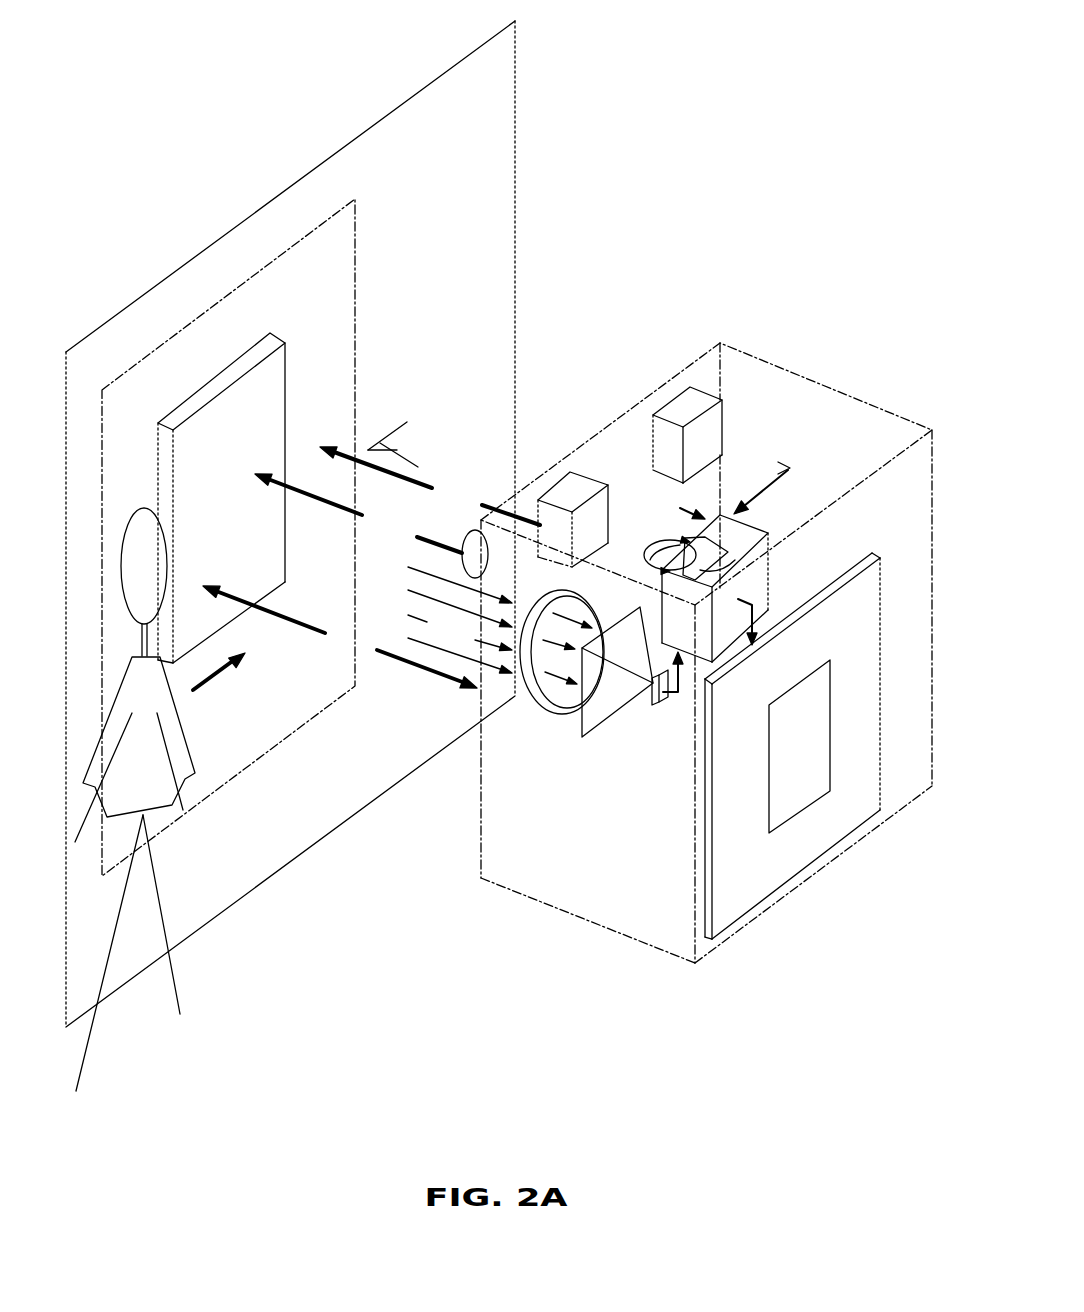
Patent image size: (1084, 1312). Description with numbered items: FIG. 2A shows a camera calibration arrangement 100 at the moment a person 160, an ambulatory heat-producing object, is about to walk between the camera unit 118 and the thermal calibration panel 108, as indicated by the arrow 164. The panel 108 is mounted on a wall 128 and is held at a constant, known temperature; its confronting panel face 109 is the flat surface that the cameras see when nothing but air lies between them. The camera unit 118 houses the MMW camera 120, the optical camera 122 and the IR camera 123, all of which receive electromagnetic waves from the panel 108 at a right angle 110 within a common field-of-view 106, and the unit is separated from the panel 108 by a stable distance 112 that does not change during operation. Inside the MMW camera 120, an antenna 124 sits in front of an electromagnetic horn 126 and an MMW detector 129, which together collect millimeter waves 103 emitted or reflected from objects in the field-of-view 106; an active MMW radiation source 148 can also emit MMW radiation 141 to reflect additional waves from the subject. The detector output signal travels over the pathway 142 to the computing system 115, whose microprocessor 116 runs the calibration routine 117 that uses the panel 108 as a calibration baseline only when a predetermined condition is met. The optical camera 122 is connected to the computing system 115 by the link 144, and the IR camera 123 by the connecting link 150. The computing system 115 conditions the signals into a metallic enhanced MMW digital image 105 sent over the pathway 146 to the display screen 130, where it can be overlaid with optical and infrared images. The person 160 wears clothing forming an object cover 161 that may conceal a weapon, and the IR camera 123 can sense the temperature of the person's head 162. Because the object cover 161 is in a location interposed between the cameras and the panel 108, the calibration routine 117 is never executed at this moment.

The camera calibration arrangement 100 is at (702, 40).
The wall 128 is at (392, 112).
The field-of-view 106 is at (210, 302).
The confronting panel face 109 is at (260, 418).
The thermal calibration panel 108 is at (168, 478).
The right angle 110 is at (409, 444).
The head 162 is at (122, 555).
The object cover 161 is at (178, 718).
The person 160 is at (195, 842).
The arrow 164 is at (208, 685).
The MMW radiation 141 is at (358, 513).
The stable distance 112 is at (340, 637).
The millimeter waves 103 is at (460, 620).
The MMW radiation source 148 is at (488, 552).
The MMW camera 120 is at (657, 757).
The antenna 124 is at (520, 683).
The electromagnetic horn 126 is at (596, 703).
The MMW detector 129 is at (688, 700).
The pathway 142 is at (687, 690).
The optical camera 122 is at (575, 490).
The connecting link 150 is at (703, 438).
The IR camera 123 is at (678, 390).
The camera unit 118 is at (690, 363).
The microprocessor 116 is at (737, 572).
The computing system 115 is at (750, 558).
The calibration routine 117 is at (667, 540).
The link 144 is at (669, 500).
The pathway 146 is at (767, 620).
The metallic enhanced MMW digital image 105 is at (822, 846).
The display screen 130 is at (690, 845).